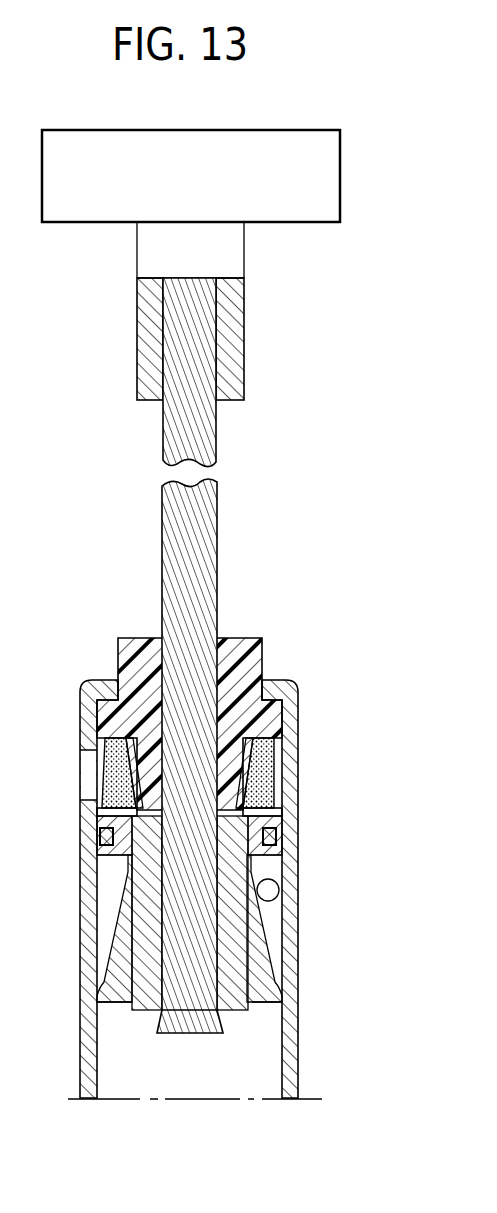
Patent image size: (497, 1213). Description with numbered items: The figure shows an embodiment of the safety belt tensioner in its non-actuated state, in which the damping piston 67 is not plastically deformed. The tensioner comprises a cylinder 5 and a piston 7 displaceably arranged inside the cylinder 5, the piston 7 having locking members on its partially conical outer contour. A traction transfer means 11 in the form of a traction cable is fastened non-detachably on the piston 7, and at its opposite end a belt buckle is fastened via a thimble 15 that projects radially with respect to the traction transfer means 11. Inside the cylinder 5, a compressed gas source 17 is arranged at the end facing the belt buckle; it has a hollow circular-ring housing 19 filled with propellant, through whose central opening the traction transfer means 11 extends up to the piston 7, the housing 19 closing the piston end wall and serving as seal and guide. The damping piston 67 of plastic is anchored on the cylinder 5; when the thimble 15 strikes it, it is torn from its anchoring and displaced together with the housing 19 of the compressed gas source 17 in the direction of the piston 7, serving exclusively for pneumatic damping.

The cylinder 5 is at (298, 940).
The piston 7 is at (108, 921).
The traction transfer means 11 is at (200, 517).
The thimble 15 is at (145, 330).
The compressed gas source 17 is at (282, 762).
The housing 19 is at (99, 768).
The damping piston 67 is at (250, 663).